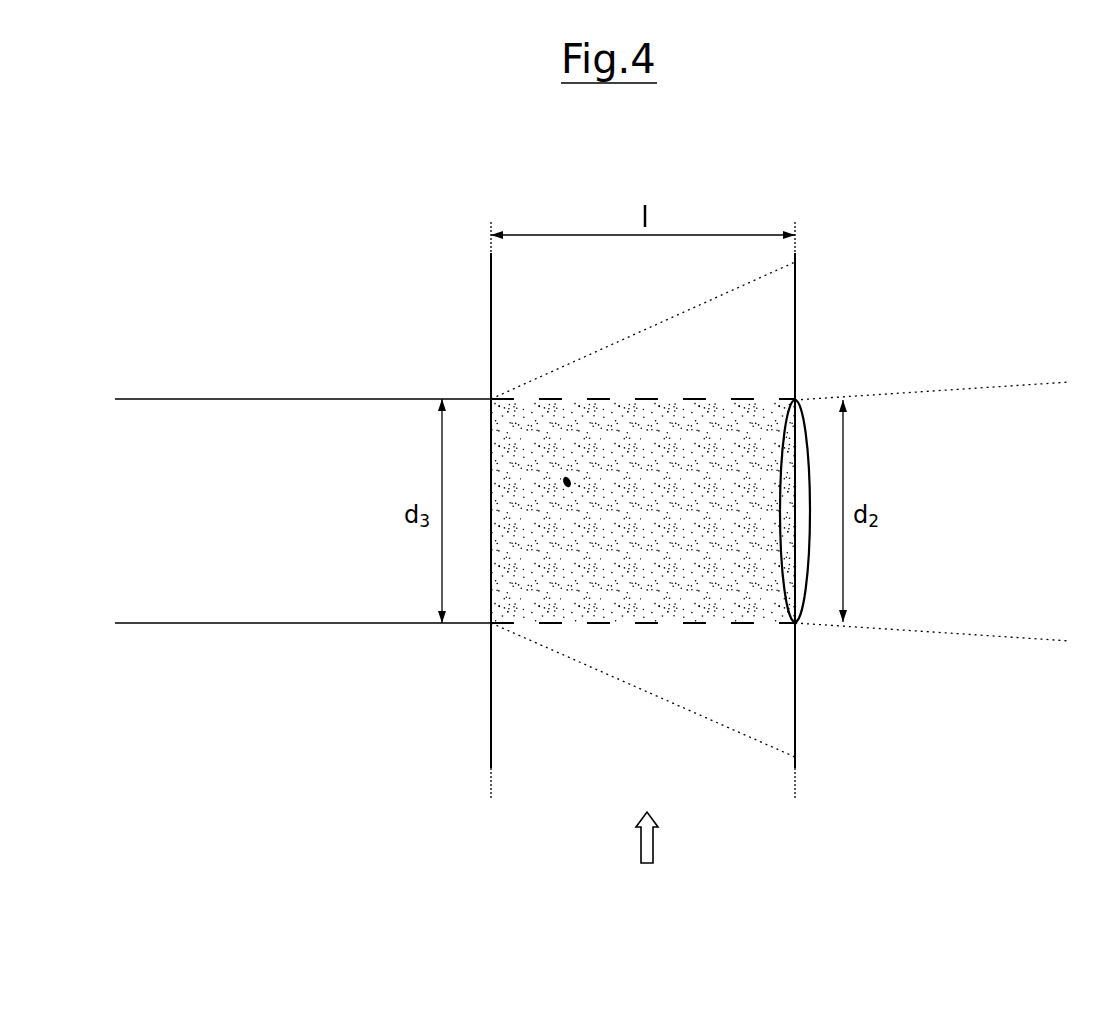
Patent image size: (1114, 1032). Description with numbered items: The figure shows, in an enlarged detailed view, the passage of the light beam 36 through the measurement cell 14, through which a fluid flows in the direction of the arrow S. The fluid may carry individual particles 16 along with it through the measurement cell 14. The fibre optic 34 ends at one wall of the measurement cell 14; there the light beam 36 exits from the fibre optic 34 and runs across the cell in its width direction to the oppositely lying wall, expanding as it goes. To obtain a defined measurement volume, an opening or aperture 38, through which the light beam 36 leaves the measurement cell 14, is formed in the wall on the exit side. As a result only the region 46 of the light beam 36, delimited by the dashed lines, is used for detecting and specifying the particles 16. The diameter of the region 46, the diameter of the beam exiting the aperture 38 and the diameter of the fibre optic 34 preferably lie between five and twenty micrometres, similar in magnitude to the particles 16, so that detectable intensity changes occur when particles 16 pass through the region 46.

The measurement cell 14 is at (797, 731).
The particles 16 is at (569, 490).
The fibre optic 34 is at (203, 428).
The light beam 36 is at (750, 300).
The aperture 38 is at (810, 597).
The region 46 is at (803, 628).
The arrow S is at (640, 842).